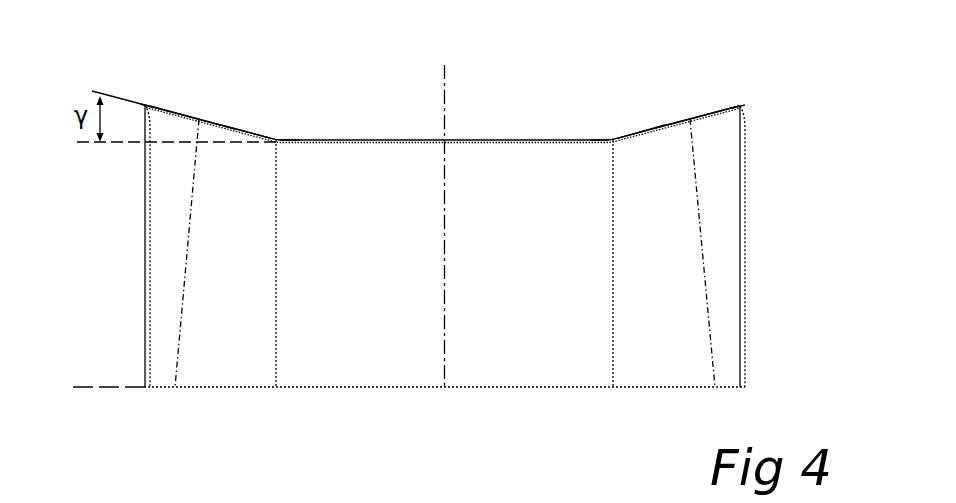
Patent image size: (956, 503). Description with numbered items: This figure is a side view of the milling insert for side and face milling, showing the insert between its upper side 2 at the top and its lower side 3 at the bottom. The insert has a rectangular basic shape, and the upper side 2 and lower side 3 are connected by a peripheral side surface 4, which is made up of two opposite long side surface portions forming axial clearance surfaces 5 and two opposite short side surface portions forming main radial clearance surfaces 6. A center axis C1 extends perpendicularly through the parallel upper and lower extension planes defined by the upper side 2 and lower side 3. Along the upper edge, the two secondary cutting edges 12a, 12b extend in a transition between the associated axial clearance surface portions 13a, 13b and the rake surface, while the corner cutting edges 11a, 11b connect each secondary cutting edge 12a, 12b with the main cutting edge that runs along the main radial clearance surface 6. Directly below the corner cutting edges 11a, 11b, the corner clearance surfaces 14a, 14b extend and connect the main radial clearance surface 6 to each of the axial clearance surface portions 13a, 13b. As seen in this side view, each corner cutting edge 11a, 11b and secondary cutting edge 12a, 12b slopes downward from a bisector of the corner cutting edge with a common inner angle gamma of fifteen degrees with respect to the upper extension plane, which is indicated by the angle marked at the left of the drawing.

The upper side 2 is at (523, 139).
The lower side 3 is at (520, 387).
The peripheral side surface 4 is at (543, 288).
The axial clearance surface 5 is at (374, 288).
The main radial clearance surface 6 is at (146, 165).
The corner cutting edge 11a is at (717, 110).
The corner cutting edge 11b is at (174, 112).
The secondary cutting edge 12a is at (656, 130).
The secondary cutting edge 12b is at (234, 128).
The axial clearance surface portion 13a is at (681, 288).
The axial clearance surface portion 13b is at (250, 288).
The corner clearance surface 14a is at (723, 261).
The corner clearance surface 14b is at (165, 256).
The center axis C1 is at (445, 211).